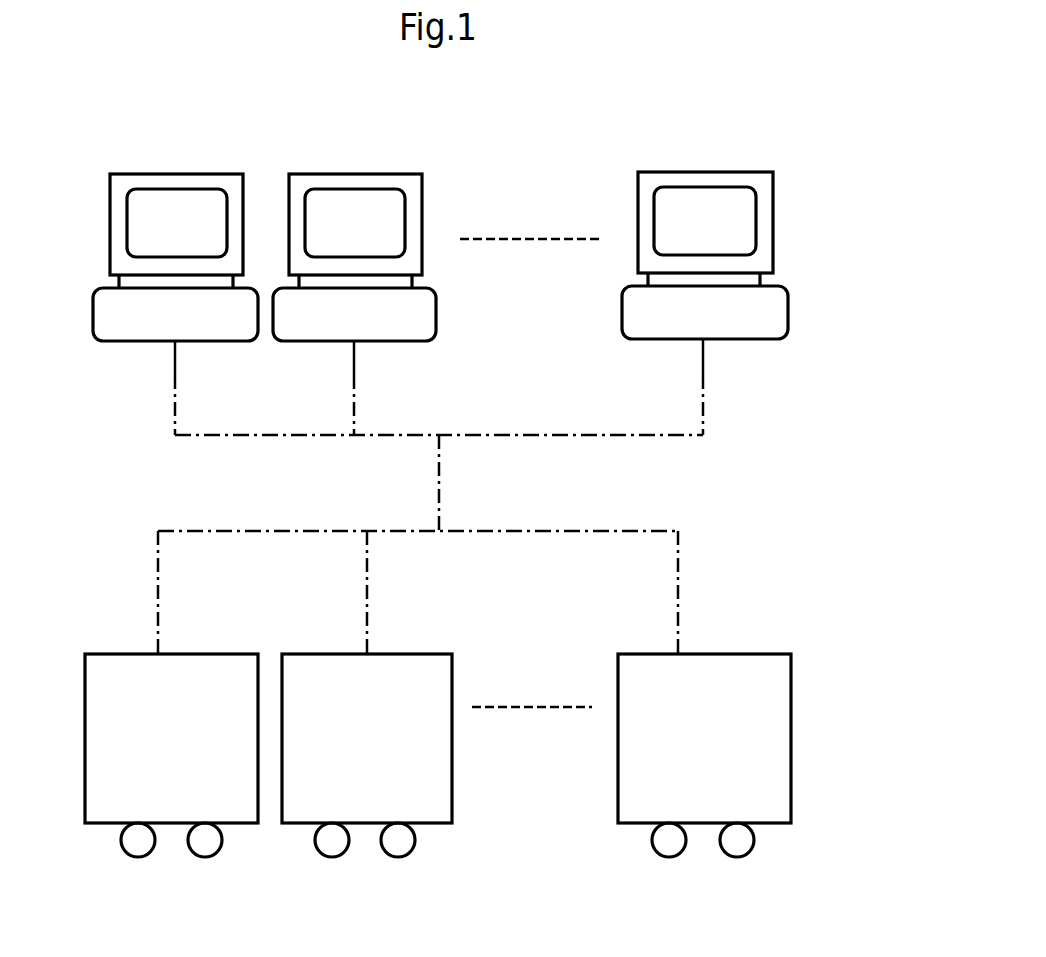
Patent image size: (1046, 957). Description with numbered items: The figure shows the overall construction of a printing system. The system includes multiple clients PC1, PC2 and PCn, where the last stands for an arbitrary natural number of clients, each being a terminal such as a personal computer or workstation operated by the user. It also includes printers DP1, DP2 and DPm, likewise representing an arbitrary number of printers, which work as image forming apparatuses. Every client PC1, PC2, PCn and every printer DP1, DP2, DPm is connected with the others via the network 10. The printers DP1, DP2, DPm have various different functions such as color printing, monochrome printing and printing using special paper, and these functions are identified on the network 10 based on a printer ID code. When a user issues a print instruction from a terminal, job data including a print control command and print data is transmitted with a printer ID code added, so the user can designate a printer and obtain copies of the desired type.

The client PC1 is at (110, 193).
The client PC2 is at (415, 188).
The client PCn is at (645, 183).
The network 10 is at (588, 531).
The printer DP1 is at (222, 654).
The printer DP2 is at (415, 654).
The printer DPm is at (773, 654).